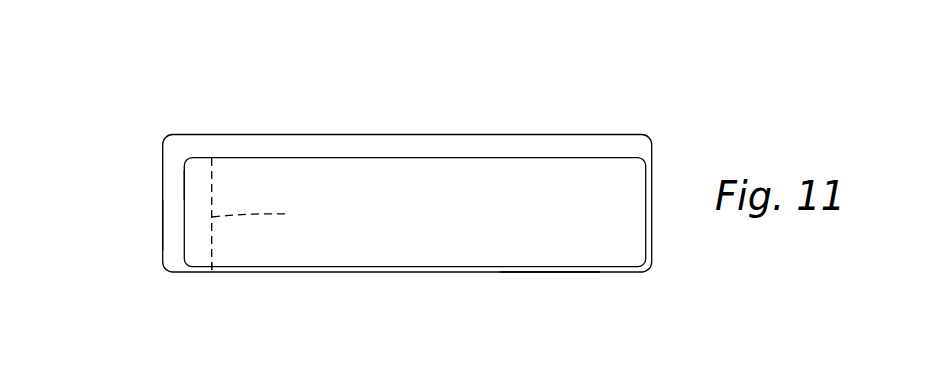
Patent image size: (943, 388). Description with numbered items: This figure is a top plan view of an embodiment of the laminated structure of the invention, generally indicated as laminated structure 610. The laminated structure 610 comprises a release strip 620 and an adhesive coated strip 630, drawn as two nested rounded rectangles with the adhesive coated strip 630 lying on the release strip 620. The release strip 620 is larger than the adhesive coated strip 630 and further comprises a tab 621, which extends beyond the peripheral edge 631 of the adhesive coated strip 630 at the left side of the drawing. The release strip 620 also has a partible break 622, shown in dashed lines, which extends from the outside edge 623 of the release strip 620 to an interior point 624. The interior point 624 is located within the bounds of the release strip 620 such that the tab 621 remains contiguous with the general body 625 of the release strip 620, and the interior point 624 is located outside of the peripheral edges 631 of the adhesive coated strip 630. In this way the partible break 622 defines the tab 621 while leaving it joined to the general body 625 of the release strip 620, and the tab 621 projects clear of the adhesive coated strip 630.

The laminated structure 610 is at (478, 37).
The release strip 620 is at (542, 135).
The tab 621 is at (163, 225).
The partible break 622 is at (274, 222).
The outside edge 623 is at (203, 272).
The interior point 624 is at (212, 158).
The general body 625 is at (550, 272).
The adhesive coated strip 630 is at (312, 158).
The peripheral edge 631 is at (184, 183).